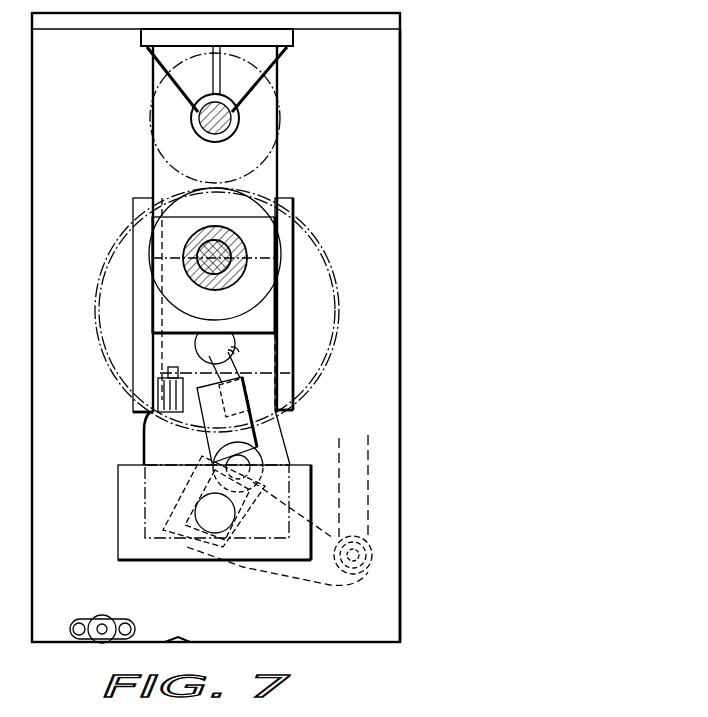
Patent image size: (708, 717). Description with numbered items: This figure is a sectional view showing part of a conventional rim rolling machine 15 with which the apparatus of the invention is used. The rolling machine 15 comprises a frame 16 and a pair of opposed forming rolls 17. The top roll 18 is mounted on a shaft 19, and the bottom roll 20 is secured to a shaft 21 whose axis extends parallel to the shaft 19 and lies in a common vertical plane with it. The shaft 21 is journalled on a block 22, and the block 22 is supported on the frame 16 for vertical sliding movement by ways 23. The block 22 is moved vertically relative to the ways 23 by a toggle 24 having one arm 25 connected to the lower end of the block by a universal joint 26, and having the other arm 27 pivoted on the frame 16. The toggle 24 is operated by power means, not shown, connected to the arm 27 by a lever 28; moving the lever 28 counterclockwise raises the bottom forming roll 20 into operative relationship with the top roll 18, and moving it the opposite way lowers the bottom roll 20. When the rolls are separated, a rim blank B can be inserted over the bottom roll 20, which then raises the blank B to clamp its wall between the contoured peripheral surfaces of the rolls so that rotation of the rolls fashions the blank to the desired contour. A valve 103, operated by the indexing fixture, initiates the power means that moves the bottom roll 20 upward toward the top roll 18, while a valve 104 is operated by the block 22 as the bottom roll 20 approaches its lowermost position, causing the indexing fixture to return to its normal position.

The rolling machine 15 is at (404, 326).
The frame 16 is at (396, 409).
The forming rolls 17 is at (257, 193).
The top roll 18 is at (283, 122).
The shaft 19 is at (218, 132).
The bottom roll 20 is at (213, 304).
The shaft 21 is at (220, 265).
The block 22 is at (270, 310).
The ways 23 is at (139, 310).
The toggle 24 is at (262, 449).
The arm 25 is at (210, 417).
The universal joint 26 is at (202, 308).
The arm 27 is at (181, 499).
The lever 28 is at (298, 586).
The valve 103 is at (108, 626).
The valve 104 is at (150, 418).
The rim blank B is at (327, 352).